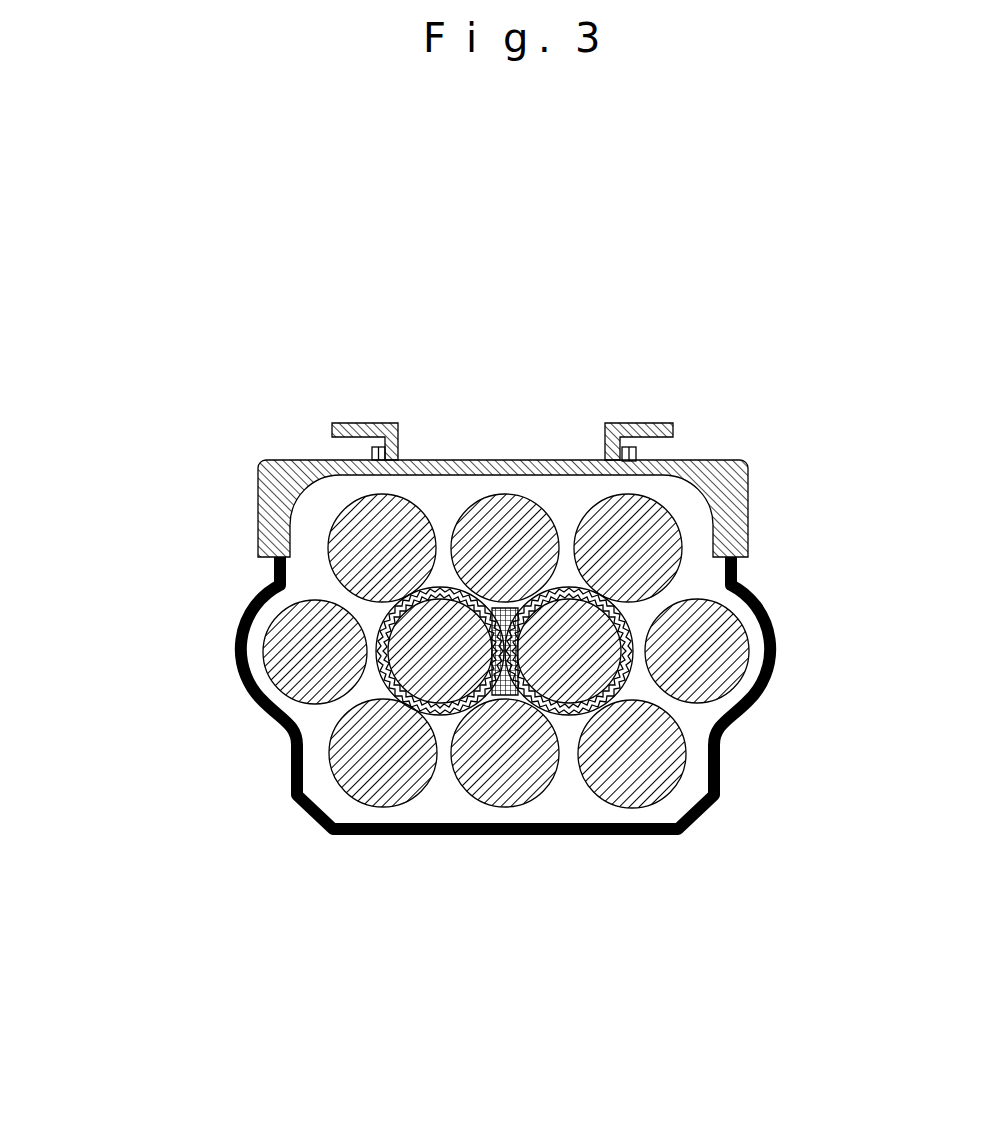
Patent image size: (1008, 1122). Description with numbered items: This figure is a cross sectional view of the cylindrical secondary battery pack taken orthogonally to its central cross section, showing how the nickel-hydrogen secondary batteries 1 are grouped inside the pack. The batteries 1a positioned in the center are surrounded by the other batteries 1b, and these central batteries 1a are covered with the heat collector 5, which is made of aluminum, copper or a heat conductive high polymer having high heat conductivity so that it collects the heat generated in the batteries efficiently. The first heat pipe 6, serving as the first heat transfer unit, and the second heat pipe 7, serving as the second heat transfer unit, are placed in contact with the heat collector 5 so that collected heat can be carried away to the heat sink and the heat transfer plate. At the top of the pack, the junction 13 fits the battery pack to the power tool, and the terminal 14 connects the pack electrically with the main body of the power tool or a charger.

The nickel-hydrogen secondary batteries 1 is at (742, 630).
The central batteries 1a is at (563, 947).
The other batteries 1b is at (398, 960).
The heat collector 5 is at (640, 683).
The first heat pipe 6 is at (417, 603).
The second heat pipe 7 is at (350, 800).
The junction 13 is at (636, 450).
The terminal 14 is at (647, 423).